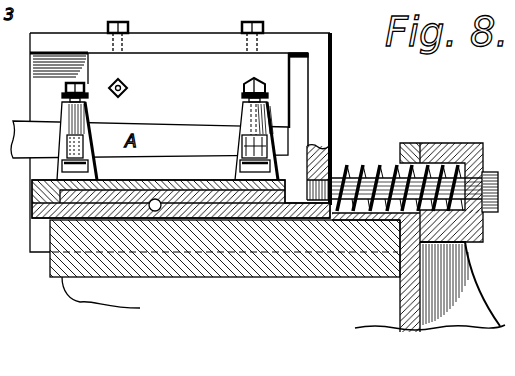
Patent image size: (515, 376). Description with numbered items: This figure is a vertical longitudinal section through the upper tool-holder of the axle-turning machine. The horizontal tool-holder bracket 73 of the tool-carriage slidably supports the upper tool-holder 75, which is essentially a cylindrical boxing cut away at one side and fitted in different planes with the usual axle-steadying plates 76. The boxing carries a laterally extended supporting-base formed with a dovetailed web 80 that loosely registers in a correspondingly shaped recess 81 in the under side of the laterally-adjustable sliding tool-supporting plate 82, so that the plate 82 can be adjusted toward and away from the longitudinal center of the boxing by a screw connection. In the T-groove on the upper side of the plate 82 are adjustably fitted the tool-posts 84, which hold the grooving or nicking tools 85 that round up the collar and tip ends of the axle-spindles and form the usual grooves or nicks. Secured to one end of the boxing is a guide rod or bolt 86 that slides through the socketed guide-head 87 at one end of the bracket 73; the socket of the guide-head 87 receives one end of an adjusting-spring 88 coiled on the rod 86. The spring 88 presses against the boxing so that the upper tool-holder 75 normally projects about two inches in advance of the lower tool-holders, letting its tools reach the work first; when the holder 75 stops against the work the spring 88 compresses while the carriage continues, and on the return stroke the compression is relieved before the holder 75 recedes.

The horizontal tool-holder bracket 73 is at (267, 256).
The upper tool-holder 75 is at (180, 107).
The axle-steadying plates 76 is at (198, 99).
The dovetailed web 80 is at (186, 203).
The recess 81 is at (118, 192).
The laterally-adjustable sliding tool-supporting plate 82 is at (28, 190).
The tool-posts 84 is at (95, 127).
The grooving or nicking tools 85 is at (70, 147).
The guide rod or bolt 86 is at (348, 175).
The socketed guide-head 87 is at (467, 124).
The adjusting-spring 88 is at (381, 165).